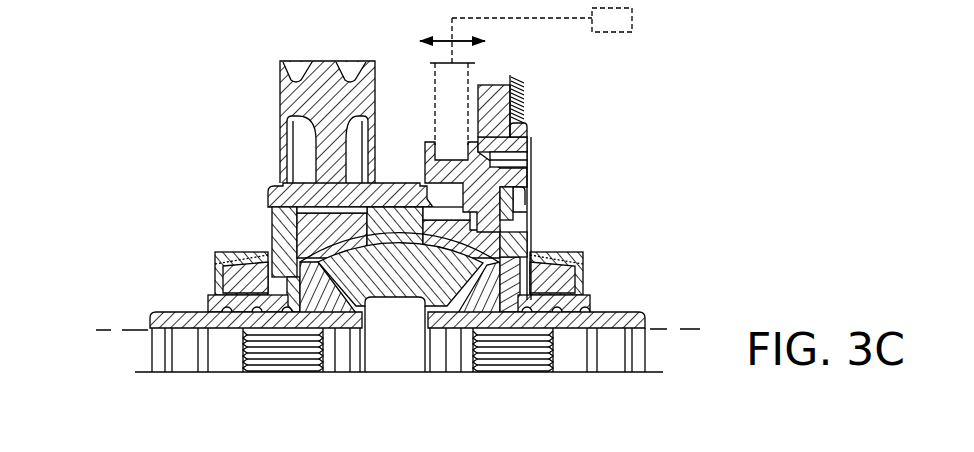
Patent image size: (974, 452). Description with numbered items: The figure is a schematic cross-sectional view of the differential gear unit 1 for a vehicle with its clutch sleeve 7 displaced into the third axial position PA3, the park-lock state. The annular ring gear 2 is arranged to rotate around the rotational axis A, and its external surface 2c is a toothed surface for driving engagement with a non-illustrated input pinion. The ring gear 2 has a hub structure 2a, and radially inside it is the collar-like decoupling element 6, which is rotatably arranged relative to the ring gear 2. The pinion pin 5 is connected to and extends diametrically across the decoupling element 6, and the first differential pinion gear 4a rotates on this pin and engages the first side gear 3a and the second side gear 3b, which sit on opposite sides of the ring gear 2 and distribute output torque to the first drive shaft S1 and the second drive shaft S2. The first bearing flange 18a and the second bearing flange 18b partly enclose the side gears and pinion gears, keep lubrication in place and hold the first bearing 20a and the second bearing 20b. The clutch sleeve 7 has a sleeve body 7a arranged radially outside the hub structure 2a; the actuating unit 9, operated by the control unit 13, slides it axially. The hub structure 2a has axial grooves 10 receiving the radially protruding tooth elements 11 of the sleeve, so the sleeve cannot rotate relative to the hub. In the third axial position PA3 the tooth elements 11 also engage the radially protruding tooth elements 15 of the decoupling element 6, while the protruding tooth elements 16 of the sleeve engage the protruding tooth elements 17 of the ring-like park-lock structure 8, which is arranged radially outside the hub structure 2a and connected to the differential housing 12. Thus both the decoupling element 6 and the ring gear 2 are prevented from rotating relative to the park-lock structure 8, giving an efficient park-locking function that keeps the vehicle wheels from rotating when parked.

The differential gear unit 1 is at (212, 98).
The ring gear 2 is at (291, 91).
The hub structure 2a is at (395, 197).
The external surface 2c is at (302, 60).
The first side gear 3a is at (218, 330).
The second side gear 3b is at (614, 333).
The first differential pinion gear 4a is at (417, 262).
The pinion pin 5 is at (395, 340).
The decoupling element 6 is at (272, 211).
The clutch sleeve 7 is at (529, 218).
The sleeve body 7a is at (533, 167).
The park-lock structure 8 is at (503, 105).
The actuating unit 9 is at (312, 122).
The grooves 10 is at (506, 205).
The radially protruding tooth elements 11 is at (518, 202).
The differential housing 12 is at (515, 95).
The control unit 13 is at (633, 25).
The radially protruding tooth elements 15 is at (528, 233).
The protruding tooth elements 16 is at (500, 148).
The protruding tooth elements 17 is at (505, 163).
The first bearing flange 18a is at (208, 302).
The second bearing flange 18b is at (590, 303).
The first bearing 20a is at (215, 265).
The second bearing 20b is at (583, 262).
The rotational axis A is at (655, 374).
The first drive shaft S1 is at (130, 328).
The second drive shaft S2 is at (667, 328).
The third axial position PA3 is at (410, 95).